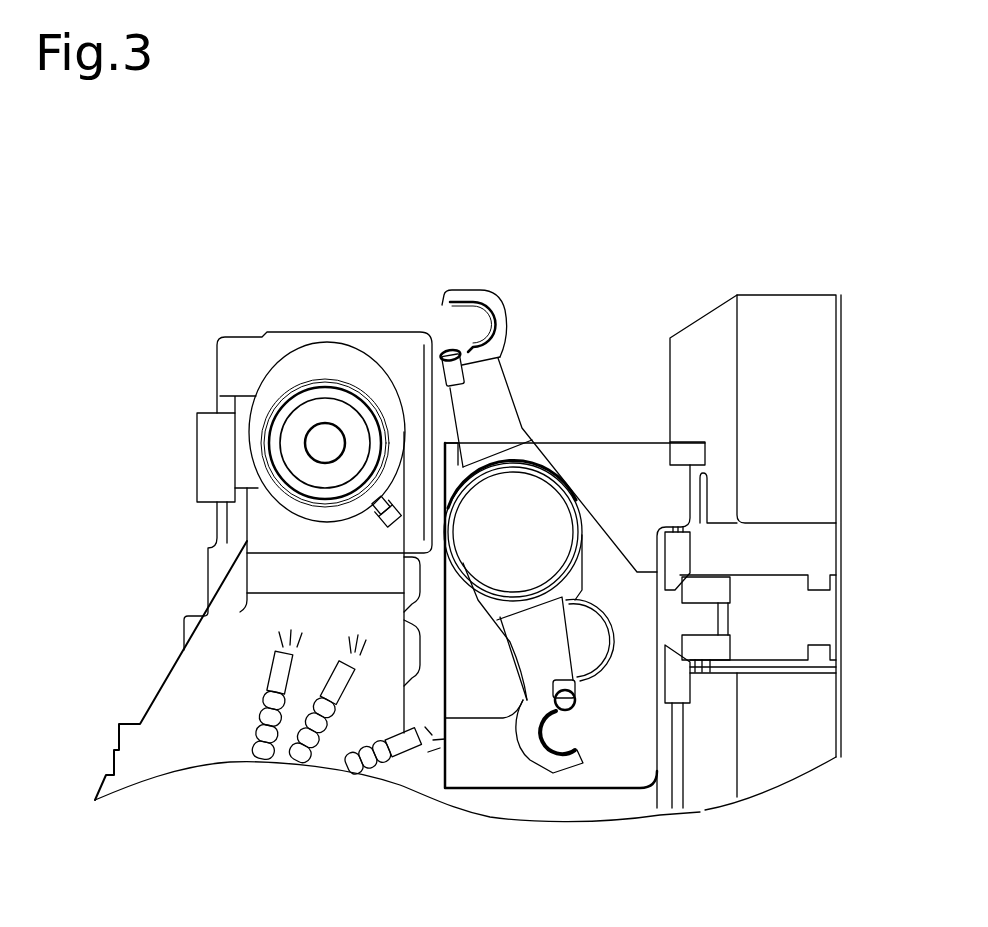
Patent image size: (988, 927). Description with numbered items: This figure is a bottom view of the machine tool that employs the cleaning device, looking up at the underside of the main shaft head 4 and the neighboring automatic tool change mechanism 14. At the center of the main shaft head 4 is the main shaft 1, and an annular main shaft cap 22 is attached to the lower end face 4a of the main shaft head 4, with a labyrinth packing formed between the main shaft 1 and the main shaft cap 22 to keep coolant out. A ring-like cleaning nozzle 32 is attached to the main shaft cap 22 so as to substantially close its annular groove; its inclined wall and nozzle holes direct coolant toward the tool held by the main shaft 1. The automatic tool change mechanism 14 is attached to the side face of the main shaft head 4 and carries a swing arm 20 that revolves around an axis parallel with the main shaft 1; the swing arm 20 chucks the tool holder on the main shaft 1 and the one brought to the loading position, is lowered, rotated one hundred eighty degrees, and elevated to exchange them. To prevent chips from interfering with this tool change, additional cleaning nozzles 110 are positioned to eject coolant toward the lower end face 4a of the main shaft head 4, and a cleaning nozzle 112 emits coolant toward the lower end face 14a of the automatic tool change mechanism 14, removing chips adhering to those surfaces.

The main shaft 1 is at (312, 410).
The main shaft head 4 is at (408, 347).
The lower end face 4a is at (280, 542).
The automatic tool change mechanism 14 is at (806, 408).
The lower end face 14a is at (477, 695).
The swing arm 20 is at (488, 402).
The main shaft cap 22 is at (297, 390).
The cleaning nozzle 32 is at (273, 420).
The cleaning nozzles 110 is at (330, 679).
The cleaning nozzle 112 is at (392, 768).